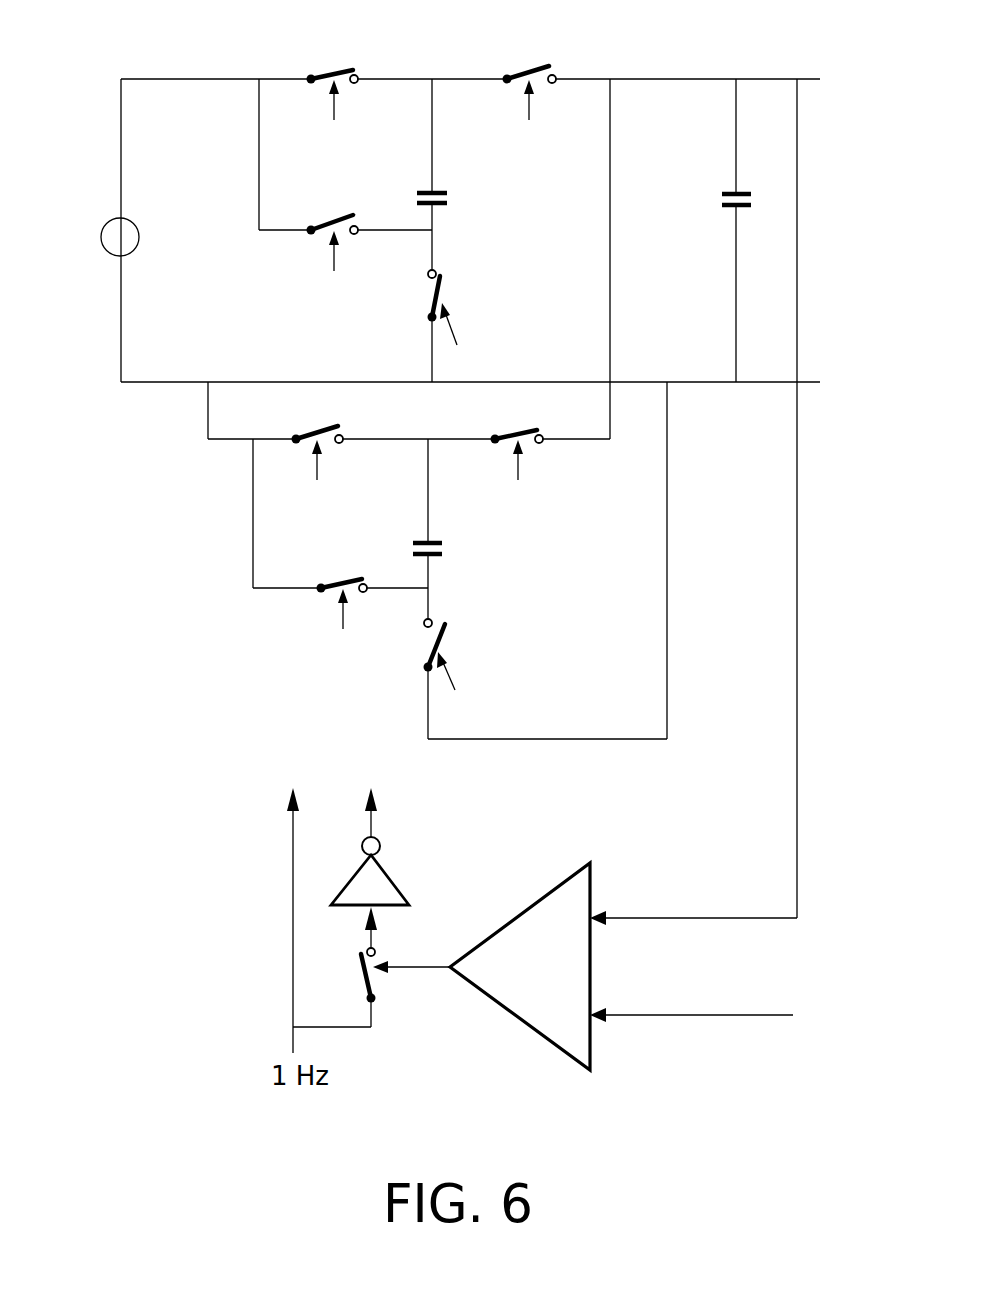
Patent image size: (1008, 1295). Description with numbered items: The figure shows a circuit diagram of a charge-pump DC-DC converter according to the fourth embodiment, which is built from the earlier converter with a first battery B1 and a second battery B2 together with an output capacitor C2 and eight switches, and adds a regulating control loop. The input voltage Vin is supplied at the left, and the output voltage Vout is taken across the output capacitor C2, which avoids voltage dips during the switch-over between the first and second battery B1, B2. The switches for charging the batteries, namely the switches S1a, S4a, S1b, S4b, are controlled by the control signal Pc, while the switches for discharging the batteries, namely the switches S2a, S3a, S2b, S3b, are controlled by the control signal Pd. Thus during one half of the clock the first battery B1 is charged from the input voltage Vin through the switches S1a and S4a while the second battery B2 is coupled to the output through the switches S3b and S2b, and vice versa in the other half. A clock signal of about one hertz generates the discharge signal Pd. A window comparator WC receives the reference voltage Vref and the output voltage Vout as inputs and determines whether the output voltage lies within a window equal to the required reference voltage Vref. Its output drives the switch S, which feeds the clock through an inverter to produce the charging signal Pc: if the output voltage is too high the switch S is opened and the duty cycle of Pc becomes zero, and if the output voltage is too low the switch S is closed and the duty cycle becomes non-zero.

The input voltage Vin is at (97, 236).
The output voltage Vout is at (851, 171).
The switch S1a is at (333, 89).
The switch S2a is at (530, 87).
The switch S3a is at (333, 239).
The switch S4a is at (460, 326).
The switch S1b is at (318, 446).
The switch S2b is at (517, 449).
The switch S3b is at (342, 599).
The switch S4b is at (458, 679).
The first battery B1 is at (448, 176).
The second battery B2 is at (445, 531).
The output capacitor C2 is at (755, 230).
The control signal Pd is at (325, 905).
The control signal Pc is at (370, 854).
The switch S is at (356, 987).
The window comparator WC is at (585, 966).
The reference voltage Vref is at (725, 1016).